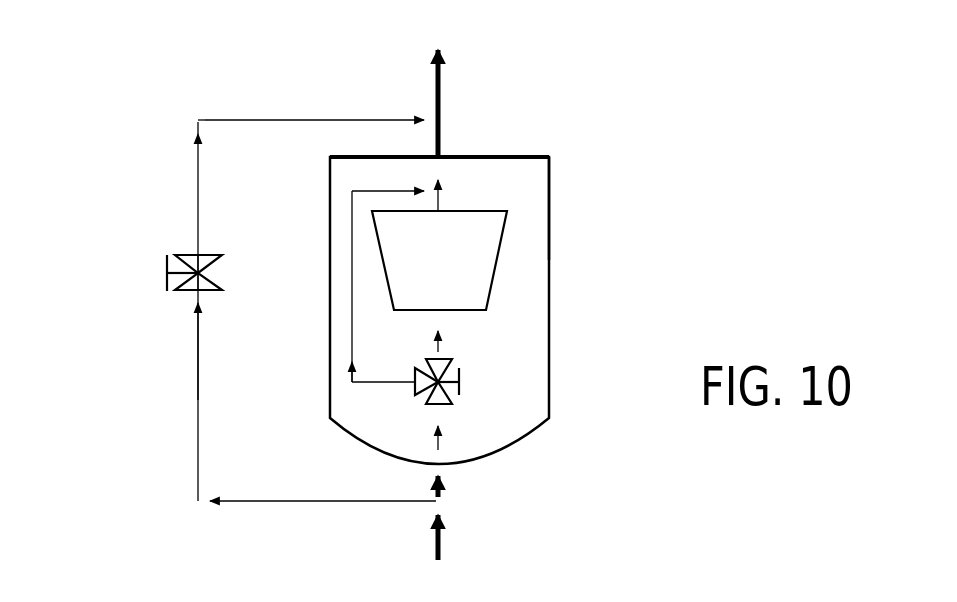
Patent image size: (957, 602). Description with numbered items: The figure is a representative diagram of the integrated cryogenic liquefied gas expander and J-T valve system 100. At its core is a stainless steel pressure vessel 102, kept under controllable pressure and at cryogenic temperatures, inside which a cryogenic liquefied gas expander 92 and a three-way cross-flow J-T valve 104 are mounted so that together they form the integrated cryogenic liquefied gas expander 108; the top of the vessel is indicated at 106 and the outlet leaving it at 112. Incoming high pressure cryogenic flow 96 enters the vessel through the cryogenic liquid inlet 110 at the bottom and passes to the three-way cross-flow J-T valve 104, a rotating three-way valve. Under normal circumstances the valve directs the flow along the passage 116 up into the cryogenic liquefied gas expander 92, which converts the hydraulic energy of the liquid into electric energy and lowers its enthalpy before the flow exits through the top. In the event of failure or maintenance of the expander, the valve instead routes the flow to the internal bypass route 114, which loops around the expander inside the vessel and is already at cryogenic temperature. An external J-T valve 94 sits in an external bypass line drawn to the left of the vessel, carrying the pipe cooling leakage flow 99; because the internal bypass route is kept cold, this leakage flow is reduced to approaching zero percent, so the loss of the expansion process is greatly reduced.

The integrated cryogenic liquefied gas expander and J-T valve system 100 is at (138, 84).
The pipe cooling leakage flow 99 is at (197, 400).
The external J-T valve 94 is at (214, 254).
The stainless steel pressure vessel 102 is at (550, 312).
The housing top 106 is at (508, 157).
The integrated cryogenic liquefied gas expander 108 is at (550, 210).
The outlet 112 is at (443, 156).
The cryogenic liquefied gas expander 92 is at (494, 268).
The internal bypass route 114 is at (380, 384).
The flow passage to expander 116 is at (441, 343).
The three-way cross-flow J-T valve 104 is at (450, 398).
The cryogenic liquid inlet 110 is at (435, 462).
The incoming cryogenic flow 96 is at (443, 487).